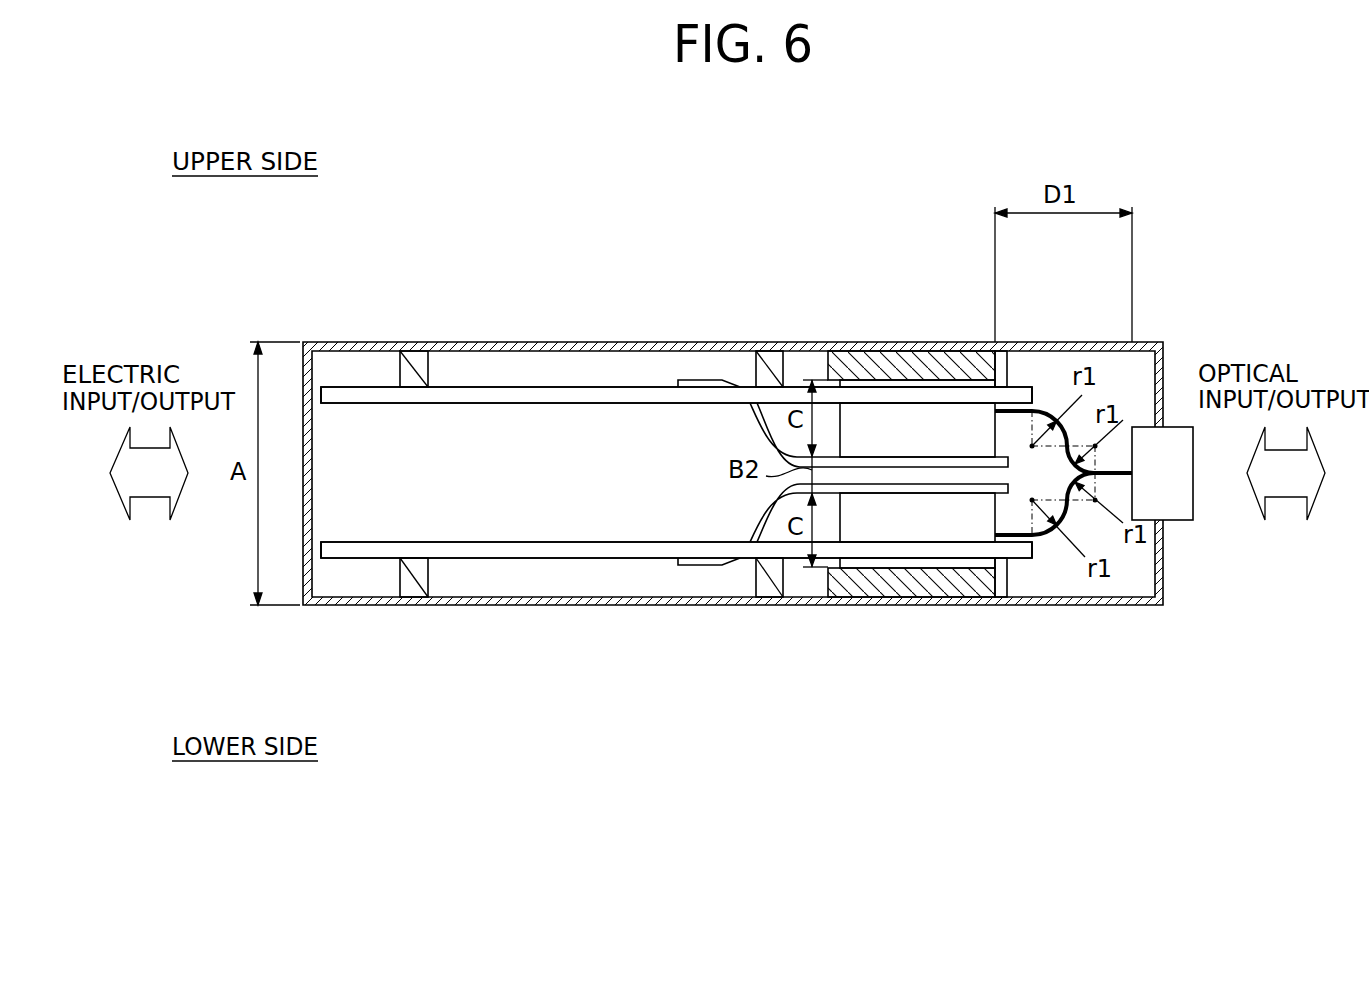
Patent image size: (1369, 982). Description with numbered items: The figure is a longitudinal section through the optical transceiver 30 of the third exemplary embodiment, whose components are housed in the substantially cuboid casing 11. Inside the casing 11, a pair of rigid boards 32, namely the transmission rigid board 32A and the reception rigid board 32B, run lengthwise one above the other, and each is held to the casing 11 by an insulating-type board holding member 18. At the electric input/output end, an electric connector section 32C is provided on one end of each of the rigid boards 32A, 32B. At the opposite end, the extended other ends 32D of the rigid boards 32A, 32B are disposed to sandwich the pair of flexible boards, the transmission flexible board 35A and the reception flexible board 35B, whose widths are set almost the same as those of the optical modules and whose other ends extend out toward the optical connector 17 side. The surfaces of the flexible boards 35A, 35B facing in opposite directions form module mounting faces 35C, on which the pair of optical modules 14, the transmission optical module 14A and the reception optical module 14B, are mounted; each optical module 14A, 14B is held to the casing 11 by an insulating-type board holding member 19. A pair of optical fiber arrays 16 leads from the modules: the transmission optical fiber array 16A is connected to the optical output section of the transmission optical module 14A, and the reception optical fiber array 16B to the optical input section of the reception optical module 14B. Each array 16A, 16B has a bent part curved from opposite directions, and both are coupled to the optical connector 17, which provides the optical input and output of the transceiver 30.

The optical transceiver 30 is at (1198, 245).
The casing 11 is at (608, 342).
The rigid boards 32 is at (488, 388).
The transmission rigid board 32A is at (535, 397).
The reception rigid board 32B is at (535, 555).
The electric connector section 32C is at (370, 385).
The extended other ends 32D is at (968, 387).
The board holding member 18 is at (418, 355).
The transmission flexible board 35A is at (705, 380).
The reception flexible board 35B is at (700, 565).
The module mounting faces 35C is at (820, 385).
The board holding member 19 is at (853, 452).
The optical modules 14 is at (915, 352).
The transmission optical module 14A is at (900, 417).
The reception optical module 14B is at (937, 530).
The optical fiber arrays 16 is at (1013, 387).
The transmission optical fiber array 16A is at (1062, 410).
The reception optical fiber array 16B is at (1050, 537).
The optical connector 17 is at (1178, 503).